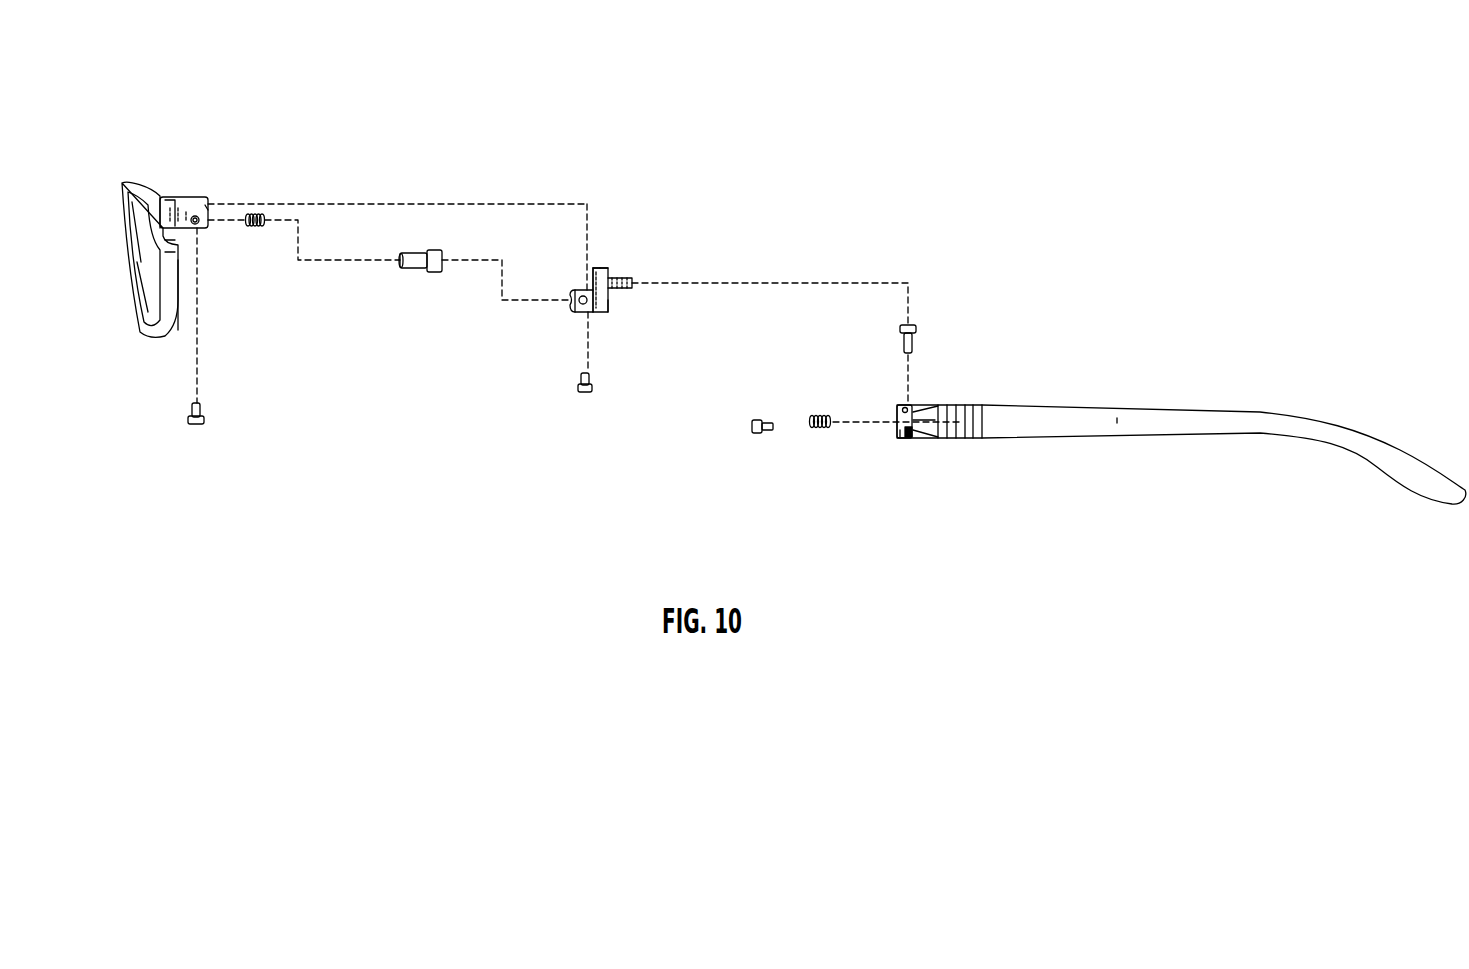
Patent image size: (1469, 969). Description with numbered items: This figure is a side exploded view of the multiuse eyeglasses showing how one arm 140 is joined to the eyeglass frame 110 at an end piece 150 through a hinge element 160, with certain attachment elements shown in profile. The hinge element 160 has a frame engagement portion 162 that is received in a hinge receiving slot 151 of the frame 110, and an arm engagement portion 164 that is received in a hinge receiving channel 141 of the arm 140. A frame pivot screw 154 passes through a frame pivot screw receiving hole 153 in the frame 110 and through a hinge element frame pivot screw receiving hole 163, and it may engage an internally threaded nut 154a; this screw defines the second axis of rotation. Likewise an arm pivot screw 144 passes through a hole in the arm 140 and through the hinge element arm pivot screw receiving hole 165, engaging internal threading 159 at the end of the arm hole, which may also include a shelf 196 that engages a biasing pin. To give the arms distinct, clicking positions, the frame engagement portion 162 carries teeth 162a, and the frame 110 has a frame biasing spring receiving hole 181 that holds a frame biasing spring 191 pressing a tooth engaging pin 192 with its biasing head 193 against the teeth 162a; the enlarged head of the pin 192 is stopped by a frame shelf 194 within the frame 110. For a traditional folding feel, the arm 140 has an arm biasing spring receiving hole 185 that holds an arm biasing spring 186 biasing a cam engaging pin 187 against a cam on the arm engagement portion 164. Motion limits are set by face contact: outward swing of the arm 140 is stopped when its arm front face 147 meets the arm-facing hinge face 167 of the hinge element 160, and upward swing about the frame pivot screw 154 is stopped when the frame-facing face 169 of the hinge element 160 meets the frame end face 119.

The eyeglass frame 110 is at (150, 183).
The end piece 150 is at (170, 207).
The frame biasing spring receiving hole 181 is at (183, 215).
The frame shelf 194 is at (197, 217).
The hinge receiving slot 151 is at (205, 217).
The frame end face 119 is at (210, 200).
The frame pivot screw receiving hole 153 is at (200, 235).
The frame biasing spring 191 is at (255, 222).
The internally threaded nut 154a is at (190, 418).
The tooth engaging pin 192 is at (415, 268).
The biasing head 193 is at (442, 258).
The hinge element 160 is at (612, 277).
The frame engagement portion 162 is at (590, 263).
The frame-facing face 169 is at (596, 277).
The hinge element arm pivot screw receiving hole 165 is at (623, 277).
The arm engagement portion 164 is at (630, 280).
The arm-facing hinge face 167 is at (608, 308).
The hinge element frame pivot screw receiving hole 163 is at (588, 312).
The teeth 162a is at (570, 300).
The frame pivot screw 154 is at (588, 392).
The arm pivot screw 144 is at (908, 320).
The cam engaging pin 187 is at (755, 425).
The arm biasing spring 186 is at (828, 432).
The arm 140 is at (1135, 418).
The hinge receiving channel 141 is at (895, 418).
The shelf 196 is at (912, 415).
The arm front face 147 is at (897, 432).
The arm biasing spring receiving hole 185 is at (920, 422).
The internal threading 159 is at (908, 435).